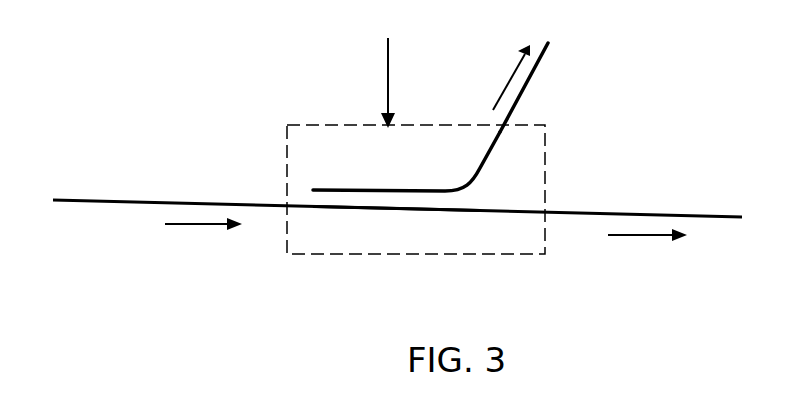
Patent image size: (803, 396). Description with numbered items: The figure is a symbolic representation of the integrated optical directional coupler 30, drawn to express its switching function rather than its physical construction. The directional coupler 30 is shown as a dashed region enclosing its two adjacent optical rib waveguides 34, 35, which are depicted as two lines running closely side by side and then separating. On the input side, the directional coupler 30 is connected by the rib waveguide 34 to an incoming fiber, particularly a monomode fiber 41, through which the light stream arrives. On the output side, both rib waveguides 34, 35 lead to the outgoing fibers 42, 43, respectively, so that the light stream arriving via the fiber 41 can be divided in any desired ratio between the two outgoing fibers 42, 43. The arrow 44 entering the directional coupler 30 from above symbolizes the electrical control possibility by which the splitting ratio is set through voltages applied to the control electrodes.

The directional coupler 30 is at (390, 237).
The rib waveguide 34 is at (450, 212).
The rib waveguide 35 is at (332, 187).
The monomode fiber 41 is at (93, 202).
The outgoing fiber 42 is at (615, 213).
The outgoing fiber 43 is at (530, 100).
The arrow 44 is at (385, 98).